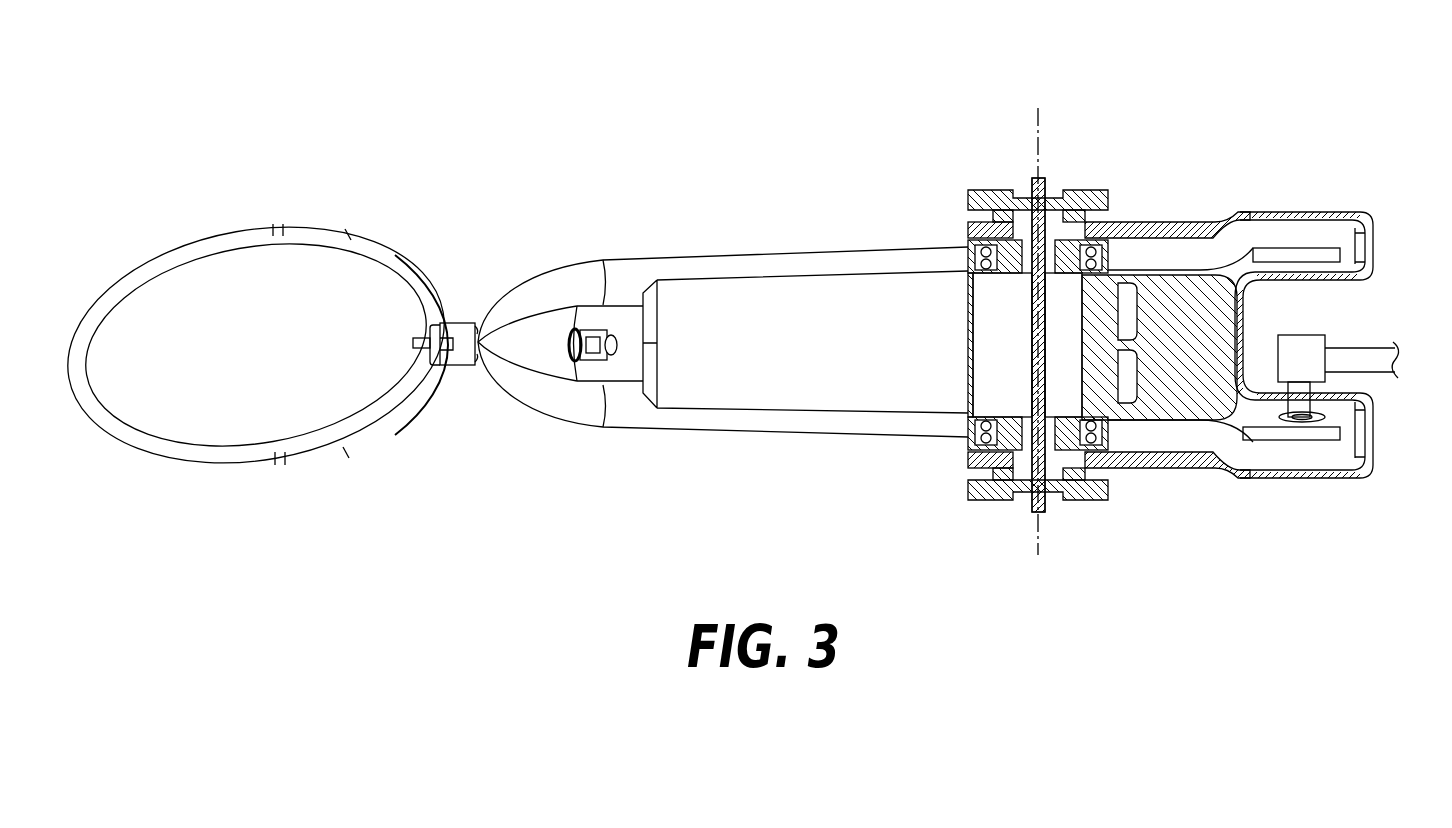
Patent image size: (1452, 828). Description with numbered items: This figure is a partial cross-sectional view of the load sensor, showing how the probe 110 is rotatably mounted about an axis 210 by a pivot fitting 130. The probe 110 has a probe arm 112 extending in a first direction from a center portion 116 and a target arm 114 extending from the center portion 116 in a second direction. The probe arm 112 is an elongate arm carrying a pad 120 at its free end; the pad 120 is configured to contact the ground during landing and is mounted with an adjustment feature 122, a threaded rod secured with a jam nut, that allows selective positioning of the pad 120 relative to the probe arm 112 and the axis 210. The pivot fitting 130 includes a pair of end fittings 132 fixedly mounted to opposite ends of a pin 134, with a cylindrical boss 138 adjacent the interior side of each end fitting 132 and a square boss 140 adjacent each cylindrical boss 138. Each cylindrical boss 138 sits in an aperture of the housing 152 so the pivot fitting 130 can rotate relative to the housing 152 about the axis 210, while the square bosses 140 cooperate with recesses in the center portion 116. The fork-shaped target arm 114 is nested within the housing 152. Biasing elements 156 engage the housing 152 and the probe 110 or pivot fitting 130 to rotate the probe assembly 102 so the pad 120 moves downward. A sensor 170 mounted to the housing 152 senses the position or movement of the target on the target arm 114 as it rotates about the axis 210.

The probe assembly 102 is at (873, 145).
The probe 110 is at (803, 227).
The probe arm 112 is at (672, 268).
The target arm 114 is at (1270, 442).
The center portion 116 is at (967, 310).
The pad 120 is at (237, 435).
The adjustment feature 122 is at (547, 353).
The pivot fitting 130 is at (958, 178).
The end fitting 132 is at (1090, 190).
The pin 134 is at (970, 340).
The cylindrical boss 138 is at (1080, 213).
The square boss 140 is at (1053, 250).
The housing 152 is at (1320, 213).
The biasing element 156 is at (993, 250).
The sensor 170 is at (1307, 397).
The axis 210 is at (1040, 125).